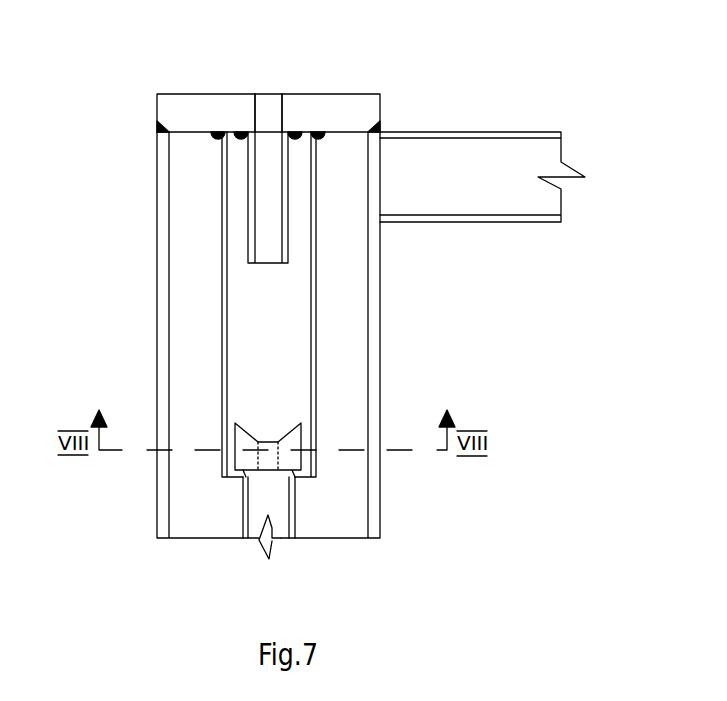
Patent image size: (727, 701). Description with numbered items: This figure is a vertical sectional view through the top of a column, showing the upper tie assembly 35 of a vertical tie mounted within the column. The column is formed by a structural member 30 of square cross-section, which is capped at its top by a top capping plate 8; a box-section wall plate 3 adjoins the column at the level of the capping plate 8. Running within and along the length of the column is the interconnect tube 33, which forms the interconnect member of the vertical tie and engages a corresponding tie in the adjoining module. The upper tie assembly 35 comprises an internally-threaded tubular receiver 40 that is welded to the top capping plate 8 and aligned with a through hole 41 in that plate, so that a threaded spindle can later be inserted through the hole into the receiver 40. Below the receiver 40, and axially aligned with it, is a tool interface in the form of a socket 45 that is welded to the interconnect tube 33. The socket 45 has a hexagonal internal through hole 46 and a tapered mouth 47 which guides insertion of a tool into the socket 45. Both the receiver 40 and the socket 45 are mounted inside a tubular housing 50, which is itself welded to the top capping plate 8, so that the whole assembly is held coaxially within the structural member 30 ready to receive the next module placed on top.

The box-section wall plate 3 is at (539, 132).
The post top capping plate 8 is at (358, 93).
The structural member 30 is at (380, 327).
The interconnect tube 33 is at (475, 523).
The upper tie assembly 35 is at (187, 242).
The internally-threaded tubular receiver 40 is at (247, 210).
The through hole 41 is at (255, 103).
The socket 45 is at (230, 431).
The hexagonal internal through hole 46 is at (262, 440).
The tapered mouth 47 is at (287, 430).
The tubular housing 50 is at (316, 305).